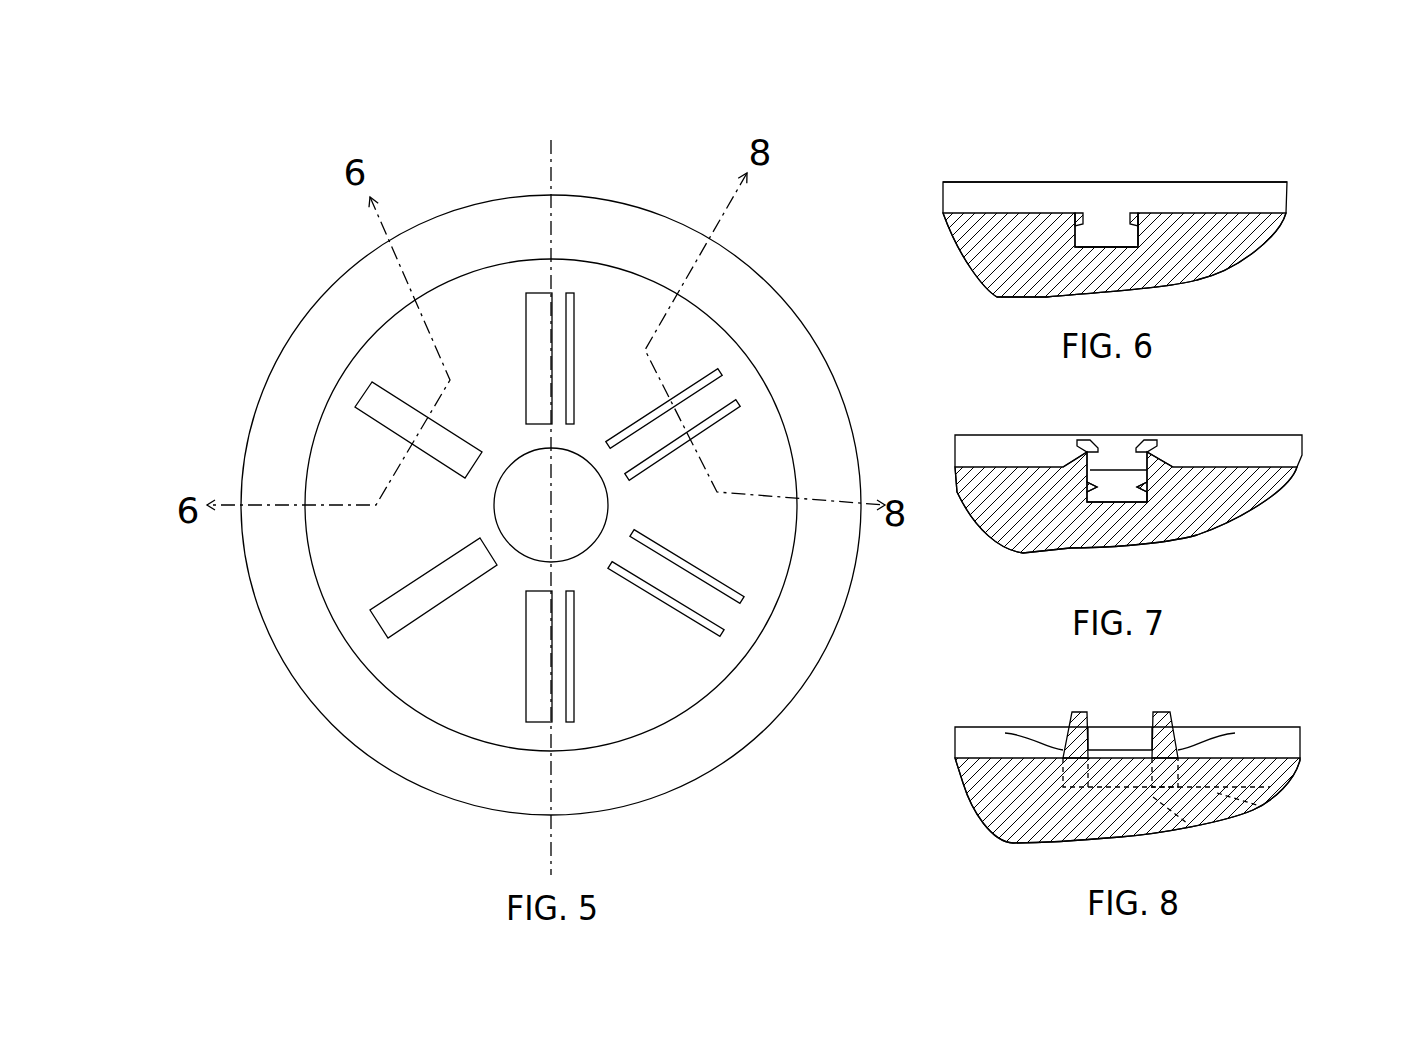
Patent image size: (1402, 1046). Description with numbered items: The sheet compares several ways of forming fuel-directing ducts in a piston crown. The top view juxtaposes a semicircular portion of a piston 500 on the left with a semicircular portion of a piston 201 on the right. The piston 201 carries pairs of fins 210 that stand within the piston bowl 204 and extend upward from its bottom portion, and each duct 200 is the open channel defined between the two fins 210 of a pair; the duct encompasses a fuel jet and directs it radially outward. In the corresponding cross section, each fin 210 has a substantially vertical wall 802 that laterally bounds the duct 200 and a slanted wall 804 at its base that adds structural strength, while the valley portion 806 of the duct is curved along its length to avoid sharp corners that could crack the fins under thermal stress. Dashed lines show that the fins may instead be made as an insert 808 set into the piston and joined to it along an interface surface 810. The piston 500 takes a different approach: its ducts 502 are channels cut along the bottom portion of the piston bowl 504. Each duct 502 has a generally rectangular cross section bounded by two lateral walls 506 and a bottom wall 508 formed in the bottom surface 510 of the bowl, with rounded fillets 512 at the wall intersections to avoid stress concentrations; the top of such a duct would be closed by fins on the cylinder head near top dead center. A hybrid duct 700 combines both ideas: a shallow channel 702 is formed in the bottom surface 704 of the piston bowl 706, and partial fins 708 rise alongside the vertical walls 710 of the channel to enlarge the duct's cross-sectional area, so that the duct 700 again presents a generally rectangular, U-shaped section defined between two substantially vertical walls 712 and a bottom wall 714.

In FIG. 5, the duct 200 is at (723, 392).
In FIG. 8, the duct 200 is at (1121, 736).
In FIG. 5, the piston 201 is at (618, 168).
In FIG. 8, the piston 201 is at (1287, 730).
In FIG. 5, the piston bowl 204 is at (697, 327).
In FIG. 8, the piston bowl 204 is at (1283, 748).
In FIG. 5, the fin 210 is at (727, 363).
In FIG. 8, the fin 210 is at (1073, 712).
In FIG. 5, the piston 500 is at (462, 175).
In FIG. 6, the piston 500 is at (1197, 178).
In FIG. 5, the duct 502 is at (375, 408).
In FIG. 6, the duct 502 is at (1108, 218).
In FIG. 5, the piston bowl 504 is at (333, 612).
In FIG. 6, the piston bowl 504 is at (1275, 202).
In FIG. 6, the lateral wall 506 is at (1082, 212).
In FIG. 6, the bottom wall 508 is at (1107, 240).
In FIG. 6, the bottom surface 510 is at (993, 213).
In FIG. 6, the rounded fillet 512 is at (1124, 239).
In FIG. 7, the duct 700 is at (1125, 457).
In FIG. 7, the shallow channel 702 is at (1112, 494).
In FIG. 7, the bottom surface 704 is at (1010, 467).
In FIG. 7, the piston bowl 706 is at (1242, 447).
In FIG. 7, the partial fin 708 is at (1080, 446).
In FIG. 7, the vertical wall 710 is at (1088, 494).
In FIG. 7, the vertical wall 712 is at (1094, 439).
In FIG. 7, the bottom wall 714 is at (1128, 494).
In FIG. 8, the vertical wall 802 is at (1101, 725).
In FIG. 8, the slanted wall 804 is at (1010, 735).
In FIG. 8, the valley portion 806 is at (1120, 752).
In FIG. 8, the insert 808 is at (1255, 803).
In FIG. 8, the interface surface 810 is at (1203, 837).